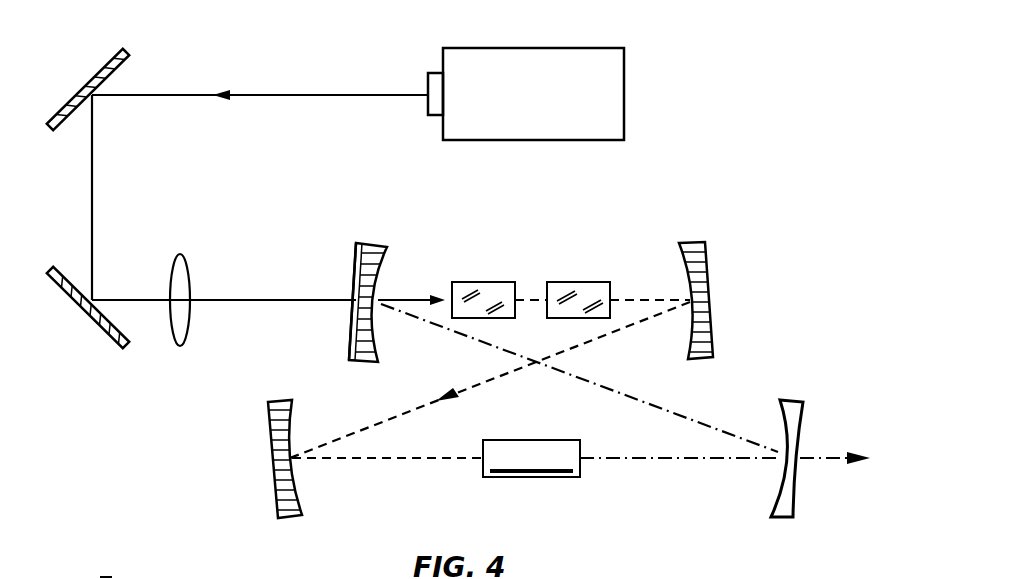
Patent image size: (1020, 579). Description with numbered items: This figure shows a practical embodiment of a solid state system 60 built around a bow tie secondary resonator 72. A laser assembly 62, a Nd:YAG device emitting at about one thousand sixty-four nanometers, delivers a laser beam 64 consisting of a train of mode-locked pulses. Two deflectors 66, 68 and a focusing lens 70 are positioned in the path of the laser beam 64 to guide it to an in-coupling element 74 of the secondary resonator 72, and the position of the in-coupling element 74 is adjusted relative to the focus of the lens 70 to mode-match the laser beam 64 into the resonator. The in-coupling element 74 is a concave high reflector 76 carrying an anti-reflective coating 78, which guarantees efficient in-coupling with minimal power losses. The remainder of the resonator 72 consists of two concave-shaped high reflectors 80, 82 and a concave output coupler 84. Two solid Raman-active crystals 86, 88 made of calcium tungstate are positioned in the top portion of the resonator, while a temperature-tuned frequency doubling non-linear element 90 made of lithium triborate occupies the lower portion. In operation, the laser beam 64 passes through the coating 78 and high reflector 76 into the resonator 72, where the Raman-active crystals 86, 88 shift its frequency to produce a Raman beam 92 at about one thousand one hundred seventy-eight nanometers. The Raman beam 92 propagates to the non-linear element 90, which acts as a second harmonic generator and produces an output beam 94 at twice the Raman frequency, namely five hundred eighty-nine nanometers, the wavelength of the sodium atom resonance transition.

The solid state system 60 is at (706, 152).
The laser assembly 62 is at (624, 92).
The laser beam 64 is at (181, 97).
The deflector 66 is at (125, 50).
The deflector 68 is at (98, 328).
The focusing lens 70 is at (190, 278).
The secondary resonator 72 is at (776, 334).
The in-coupling element 74 is at (334, 226).
The high reflector 76 is at (382, 246).
The anti-reflective coating 78 is at (352, 362).
The high reflector 80 is at (708, 258).
The high reflector 82 is at (295, 518).
The output coupler 84 is at (800, 500).
The Raman-active crystal 86 is at (487, 282).
The Raman-active crystal 88 is at (580, 282).
The non-linear element 90 is at (556, 478).
The Raman beam 92 is at (640, 298).
The output beam 94 is at (662, 460).